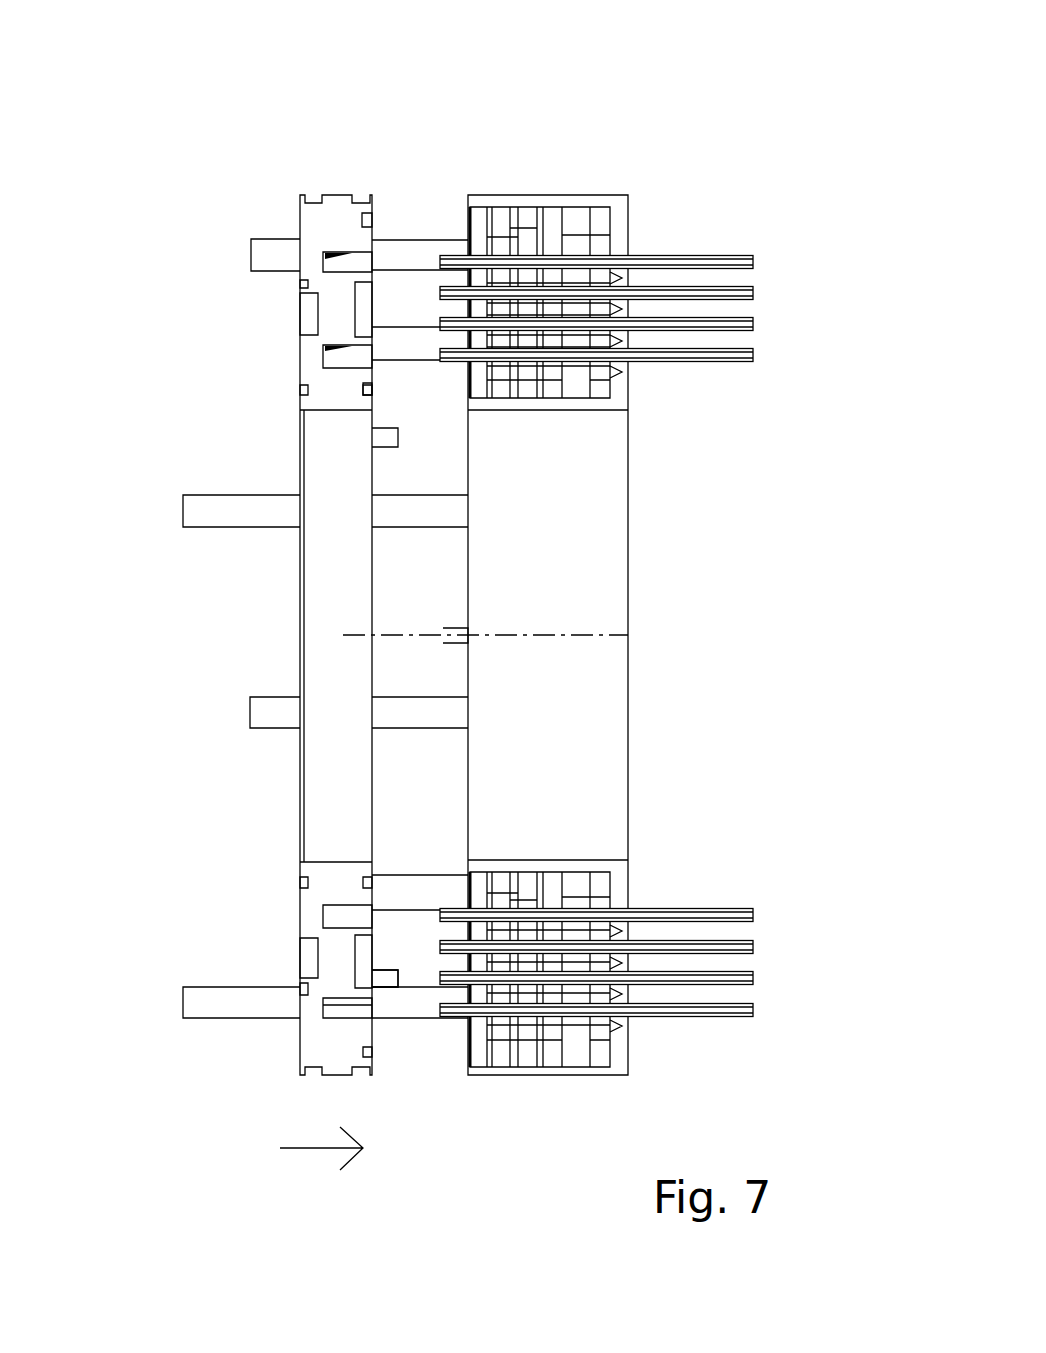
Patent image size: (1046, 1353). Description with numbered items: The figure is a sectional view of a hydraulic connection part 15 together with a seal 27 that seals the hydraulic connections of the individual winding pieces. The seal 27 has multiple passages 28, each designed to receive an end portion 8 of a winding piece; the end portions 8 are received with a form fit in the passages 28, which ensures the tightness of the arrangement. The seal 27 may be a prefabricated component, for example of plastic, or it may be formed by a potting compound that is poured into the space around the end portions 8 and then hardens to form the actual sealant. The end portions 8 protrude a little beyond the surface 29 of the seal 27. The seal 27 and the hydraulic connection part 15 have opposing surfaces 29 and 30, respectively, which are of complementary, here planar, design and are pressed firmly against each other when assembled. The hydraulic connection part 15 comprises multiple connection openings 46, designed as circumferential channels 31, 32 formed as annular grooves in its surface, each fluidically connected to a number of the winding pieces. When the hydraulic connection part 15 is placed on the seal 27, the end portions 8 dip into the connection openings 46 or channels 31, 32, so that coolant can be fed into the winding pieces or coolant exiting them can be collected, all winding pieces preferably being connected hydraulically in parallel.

The end portion 8 is at (713, 252).
The hydraulic connection part 15 is at (315, 1040).
The seal 27 is at (471, 1052).
The passage 28 is at (630, 898).
The surface of the seal 29 is at (465, 252).
The surface of the hydraulic connection part 30 is at (360, 383).
The channel 31 is at (322, 258).
The channel 32 is at (350, 297).
The connection opening 46 is at (378, 963).